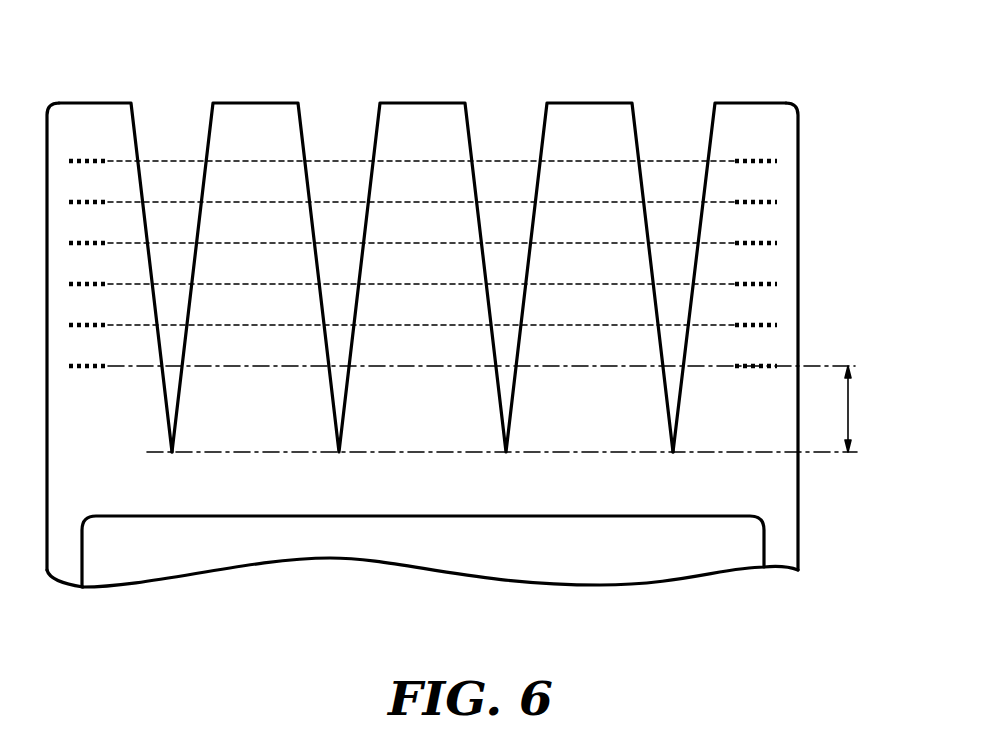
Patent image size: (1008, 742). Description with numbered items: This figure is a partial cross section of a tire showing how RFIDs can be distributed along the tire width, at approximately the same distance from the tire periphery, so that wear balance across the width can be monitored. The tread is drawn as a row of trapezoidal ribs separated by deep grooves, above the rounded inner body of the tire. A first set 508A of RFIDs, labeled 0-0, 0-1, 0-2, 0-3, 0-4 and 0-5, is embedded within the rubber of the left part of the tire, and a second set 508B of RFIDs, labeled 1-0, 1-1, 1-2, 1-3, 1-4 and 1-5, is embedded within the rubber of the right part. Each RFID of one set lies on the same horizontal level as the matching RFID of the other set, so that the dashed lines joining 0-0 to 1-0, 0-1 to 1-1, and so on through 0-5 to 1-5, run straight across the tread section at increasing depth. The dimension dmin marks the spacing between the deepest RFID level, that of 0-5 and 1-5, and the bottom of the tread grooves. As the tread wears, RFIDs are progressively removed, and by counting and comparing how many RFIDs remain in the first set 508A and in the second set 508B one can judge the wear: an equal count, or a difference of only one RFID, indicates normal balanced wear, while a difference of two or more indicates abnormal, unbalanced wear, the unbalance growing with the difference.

The first set of RFIDs 508A is at (86, 103).
The second set of RFIDs 508B is at (757, 103).
The minimum distance between scan row 5 and tooth tips dmin is at (893, 401).
The RFID 0-0 is at (60, 161).
The RFID 0-1 is at (60, 202).
The RFID 0-2 is at (60, 243).
The RFID 0-3 is at (60, 284).
The RFID 0-4 is at (60, 325).
The RFID 0-5 is at (60, 366).
The RFID 1-0 is at (783, 161).
The RFID 1-1 is at (783, 202).
The RFID 1-2 is at (783, 243).
The RFID 1-3 is at (783, 284).
The RFID 1-4 is at (783, 325).
The RFID 1-5 is at (783, 366).